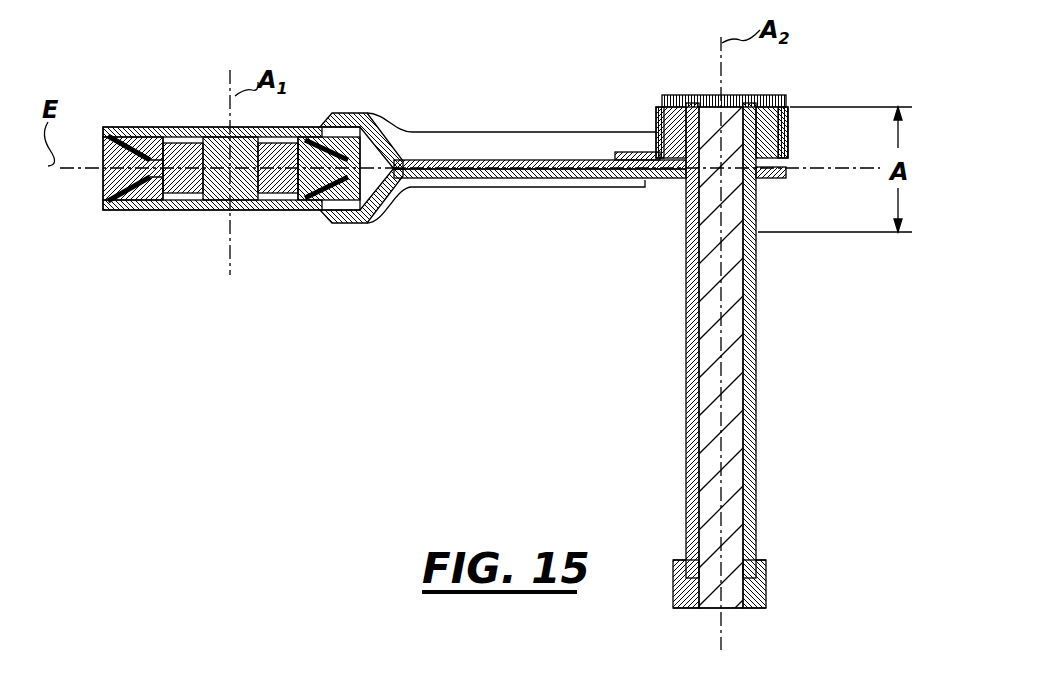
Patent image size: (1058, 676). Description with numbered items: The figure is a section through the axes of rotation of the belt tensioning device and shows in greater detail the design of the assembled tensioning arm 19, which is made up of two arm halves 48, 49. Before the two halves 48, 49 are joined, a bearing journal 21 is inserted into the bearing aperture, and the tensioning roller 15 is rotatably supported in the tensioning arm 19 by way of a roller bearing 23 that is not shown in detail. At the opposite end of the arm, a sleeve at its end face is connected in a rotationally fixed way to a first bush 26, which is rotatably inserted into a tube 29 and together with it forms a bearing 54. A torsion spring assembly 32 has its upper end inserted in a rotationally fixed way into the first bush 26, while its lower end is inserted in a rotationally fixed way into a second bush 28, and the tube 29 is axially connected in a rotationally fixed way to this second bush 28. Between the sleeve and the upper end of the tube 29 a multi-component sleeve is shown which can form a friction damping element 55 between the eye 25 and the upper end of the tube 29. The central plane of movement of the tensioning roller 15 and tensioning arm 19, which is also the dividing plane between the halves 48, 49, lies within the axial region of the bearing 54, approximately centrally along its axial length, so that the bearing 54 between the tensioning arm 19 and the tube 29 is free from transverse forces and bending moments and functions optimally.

The tensioning roller 15 is at (104, 211).
The tensioning arm 19 is at (538, 120).
The bearing journal 21 is at (205, 211).
The roller bearing 23 is at (287, 212).
The eye 25 is at (790, 122).
The first bush 26 is at (762, 97).
The second bush 28 is at (680, 600).
The tube 29 is at (688, 402).
The torsion spring assembly 32 is at (708, 292).
The arm half 48 is at (490, 170).
The arm half 49 is at (522, 188).
The bearing 54 is at (688, 200).
The friction damping element 55 is at (672, 123).